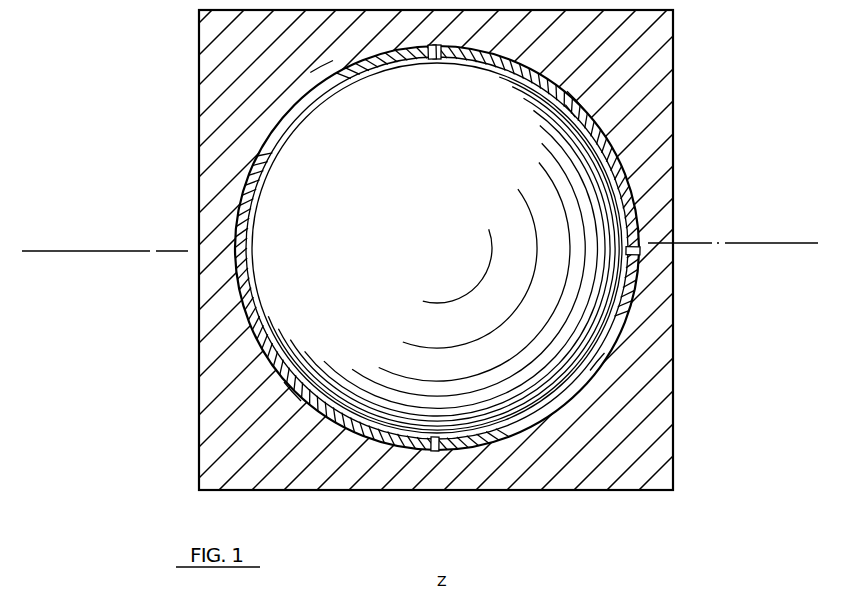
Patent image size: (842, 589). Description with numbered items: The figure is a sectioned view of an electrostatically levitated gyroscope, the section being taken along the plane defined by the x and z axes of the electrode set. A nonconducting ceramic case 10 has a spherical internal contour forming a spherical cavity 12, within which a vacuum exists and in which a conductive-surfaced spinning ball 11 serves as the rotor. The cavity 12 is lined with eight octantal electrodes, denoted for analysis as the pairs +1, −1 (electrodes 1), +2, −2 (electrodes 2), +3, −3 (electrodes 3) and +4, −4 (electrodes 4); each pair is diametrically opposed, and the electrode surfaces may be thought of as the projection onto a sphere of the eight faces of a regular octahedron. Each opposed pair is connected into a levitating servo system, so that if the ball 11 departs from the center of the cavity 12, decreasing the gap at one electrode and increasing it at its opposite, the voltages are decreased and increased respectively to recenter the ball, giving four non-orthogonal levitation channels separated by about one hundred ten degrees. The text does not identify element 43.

The nonconducting ceramic case 10 is at (623, 68).
The spherical cavity 12 is at (262, 152).
The conductive-surfaced spinning ball 11 is at (580, 195).
The clearance gap 43 is at (599, 140).
The electrode pair +1, − 1 is at (600, 360).
The electrode pair +2, − 2 is at (323, 80).
The electrode pair +3, − 3 is at (582, 96).
The electrode pair +4, − 4 is at (298, 389).